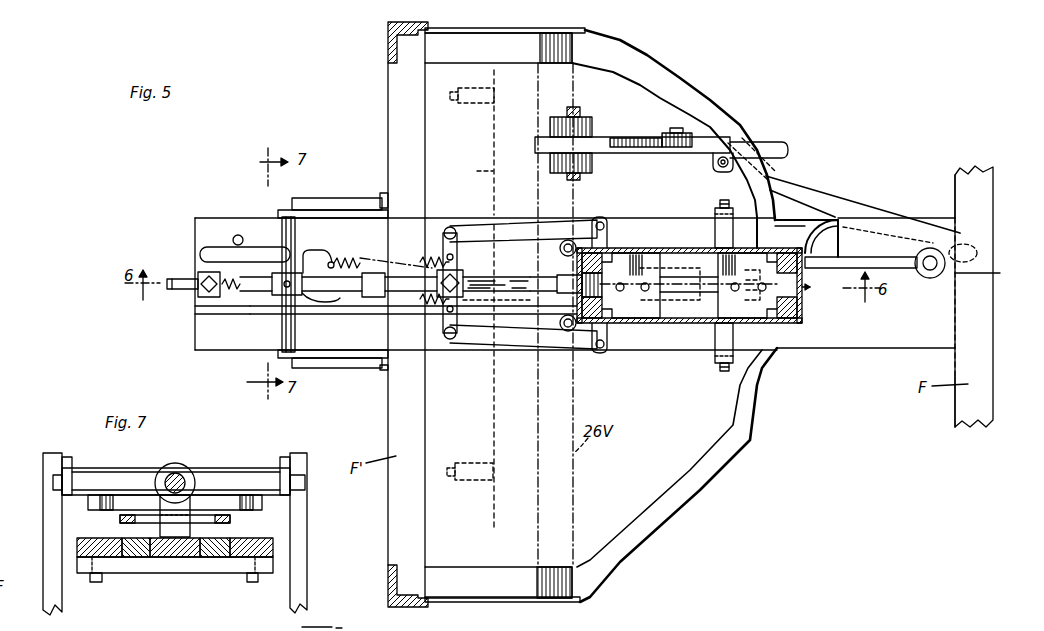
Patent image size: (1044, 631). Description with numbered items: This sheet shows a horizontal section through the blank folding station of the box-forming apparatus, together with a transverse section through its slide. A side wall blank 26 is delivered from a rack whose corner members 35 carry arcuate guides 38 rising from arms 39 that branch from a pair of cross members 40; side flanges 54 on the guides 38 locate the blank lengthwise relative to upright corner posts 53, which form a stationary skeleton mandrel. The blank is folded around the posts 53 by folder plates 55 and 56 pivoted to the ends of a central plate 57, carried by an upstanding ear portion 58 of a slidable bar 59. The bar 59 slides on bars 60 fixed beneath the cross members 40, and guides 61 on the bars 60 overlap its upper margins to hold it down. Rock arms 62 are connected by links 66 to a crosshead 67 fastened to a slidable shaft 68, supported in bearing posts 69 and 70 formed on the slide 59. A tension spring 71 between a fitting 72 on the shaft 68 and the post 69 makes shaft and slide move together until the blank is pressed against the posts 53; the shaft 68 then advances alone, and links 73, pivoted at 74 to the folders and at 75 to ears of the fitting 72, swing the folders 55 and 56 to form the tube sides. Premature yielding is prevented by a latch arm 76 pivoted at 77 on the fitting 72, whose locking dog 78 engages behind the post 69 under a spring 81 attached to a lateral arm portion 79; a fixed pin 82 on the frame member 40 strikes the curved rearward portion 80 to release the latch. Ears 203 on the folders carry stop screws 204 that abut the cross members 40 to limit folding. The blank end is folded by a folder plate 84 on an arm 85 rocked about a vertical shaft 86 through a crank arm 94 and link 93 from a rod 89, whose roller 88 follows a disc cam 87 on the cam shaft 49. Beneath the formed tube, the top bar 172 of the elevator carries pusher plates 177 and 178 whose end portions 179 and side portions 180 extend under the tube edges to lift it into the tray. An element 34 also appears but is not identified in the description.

In FIG. 5, the side wall blank 26 is at (690, 337).
In FIG. 5, the bracket 34 is at (821, 238).
In FIG. 5, the corner members 35 is at (388, 45).
In FIG. 5, the arcuate guides 38 is at (532, 62).
In FIG. 5, the arms 39 is at (672, 78).
In FIG. 5, the cross members 40 is at (858, 215).
In FIG. 7, the cross members 40 is at (103, 538).
In FIG. 5, the cam shaft 49 is at (578, 112).
In FIG. 5, the upright corner posts 53 is at (603, 255).
In FIG. 5, the side flanges 54 is at (508, 29).
In FIG. 5, the folder plate 55 is at (477, 186).
In FIG. 5, the folder plate 56 is at (700, 345).
In FIG. 5, the central plate 57 is at (558, 305).
In FIG. 5, the upstanding ear portion 58 is at (535, 278).
In FIG. 5, the slidable bar 59 is at (496, 278).
In FIG. 7, the slidable bar 59 is at (163, 557).
In FIG. 7, the bars 60 is at (228, 573).
In FIG. 5, the longitudinal guides 61 is at (383, 254).
In FIG. 7, the longitudinal guides 61 is at (130, 557).
In FIG. 5, the rock arms 62 is at (358, 200).
In FIG. 7, the rock arms 62 is at (48, 528).
In FIG. 5, the links 66 is at (328, 212).
In FIG. 7, the links 66 is at (285, 462).
In FIG. 5, the crosshead 67 is at (282, 228).
In FIG. 7, the crosshead 67 is at (228, 480).
In FIG. 5, the slidable shaft 68 is at (172, 289).
In FIG. 7, the slidable shaft 68 is at (170, 468).
In FIG. 5, the bearing post 69 is at (198, 297).
In FIG. 5, the bearing post 70 is at (372, 298).
In FIG. 7, the bearing post 70 is at (182, 535).
In FIG. 5, the tension spring 71 is at (432, 305).
In FIG. 5, the fitting 72 is at (458, 296).
In FIG. 7, the fitting 72 is at (186, 470).
In FIG. 5, the links 73 is at (512, 224).
In FIG. 5, the pivot 74 is at (602, 218).
In FIG. 5, the pivot 75 is at (450, 227).
In FIG. 5, the latch arm 76 is at (355, 315).
In FIG. 5, the pivot 77 is at (444, 338).
In FIG. 5, the locking dog 78 is at (256, 308).
In FIG. 5, the arm portion 79 is at (332, 305).
In FIG. 5, the rearwardly extending portion 80 is at (306, 256).
In FIG. 7, the rearwardly extending portion 80 is at (128, 514).
In FIG. 5, the spring 81 is at (436, 255).
In FIG. 5, the fixed pin 82 is at (238, 235).
In FIG. 5, the folder plate 84 is at (828, 220).
In FIG. 5, the pivoted arm 85 is at (903, 270).
In FIG. 5, the vertical pivot shaft 86 is at (930, 278).
In FIG. 5, the disc cam 87 is at (600, 140).
In FIG. 5, the cam following roller 88 is at (686, 128).
In FIG. 5, the rod 89 is at (765, 145).
In FIG. 5, the link 93 is at (822, 200).
In FIG. 5, the crank arm 94 is at (988, 273).
In FIG. 5, the top bar 172 is at (704, 290).
In FIG. 5, the pusher plate 177 is at (660, 296).
In FIG. 5, the pusher plate 178 is at (762, 310).
In FIG. 5, the end portions 179 is at (574, 282).
In FIG. 5, the side portions 180 is at (630, 256).
In FIG. 5, the ears 203 is at (715, 212).
In FIG. 5, the stop screws 204 is at (727, 200).